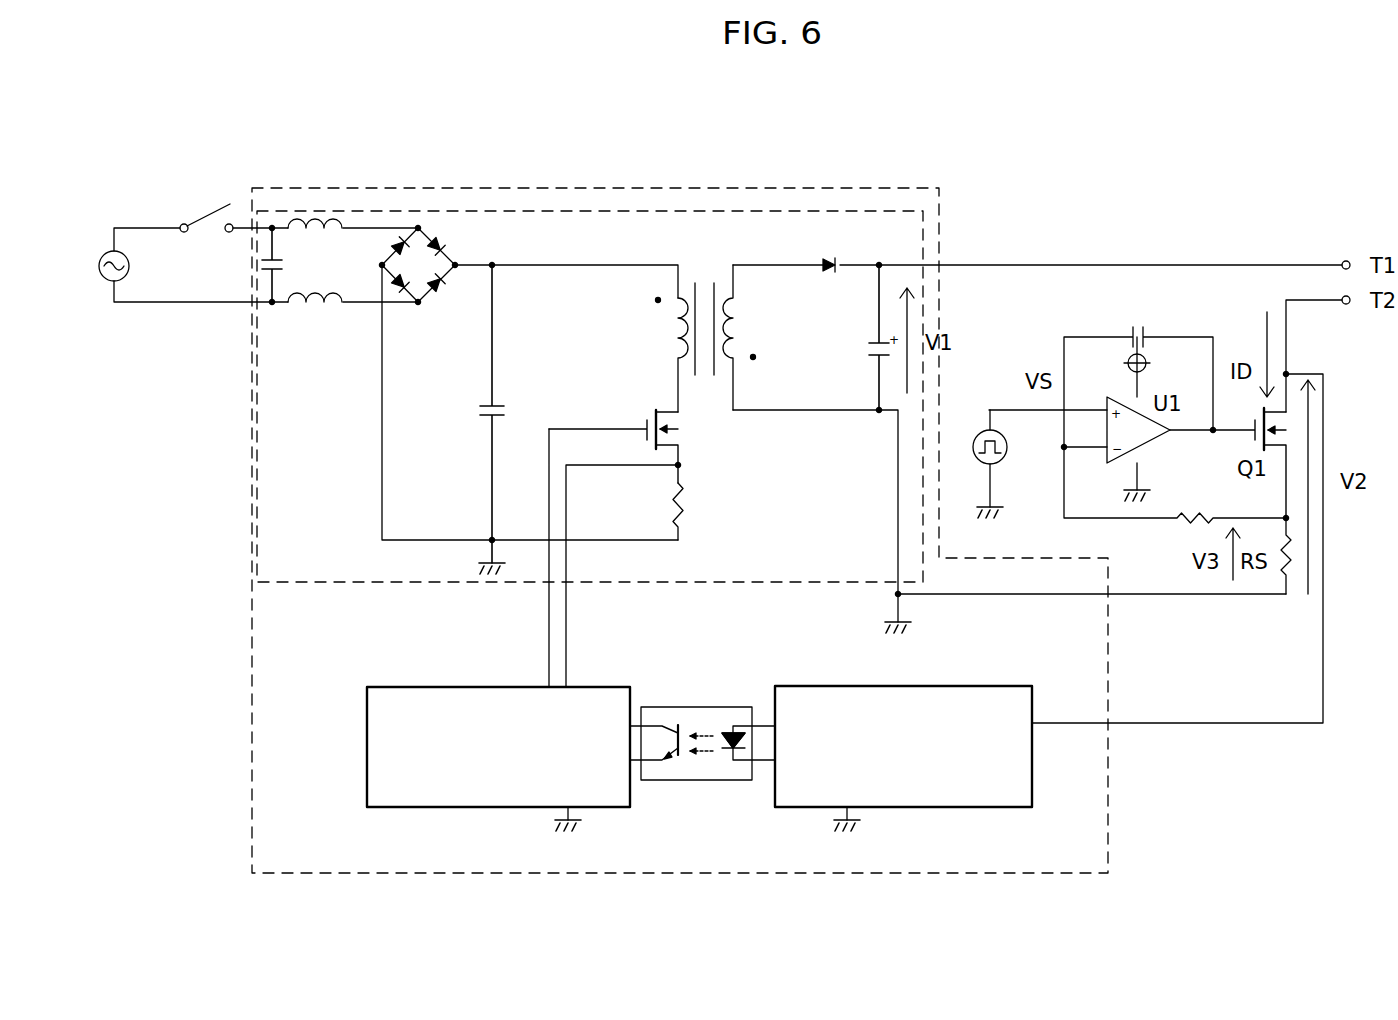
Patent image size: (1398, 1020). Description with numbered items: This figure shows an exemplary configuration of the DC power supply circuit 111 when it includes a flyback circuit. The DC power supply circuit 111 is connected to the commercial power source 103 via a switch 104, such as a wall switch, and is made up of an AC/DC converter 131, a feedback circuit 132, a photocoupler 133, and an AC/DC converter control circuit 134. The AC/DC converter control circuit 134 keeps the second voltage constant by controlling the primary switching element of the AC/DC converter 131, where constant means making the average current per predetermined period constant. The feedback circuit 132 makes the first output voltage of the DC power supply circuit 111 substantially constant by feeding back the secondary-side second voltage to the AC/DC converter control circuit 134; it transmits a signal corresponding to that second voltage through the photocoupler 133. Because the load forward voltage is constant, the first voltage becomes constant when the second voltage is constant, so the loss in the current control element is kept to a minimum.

The commercial power source 103 is at (100, 256).
The switch 104 is at (200, 212).
The DC power supply circuit 111 is at (593, 188).
The AC/DC converter 131 is at (678, 210).
The feedback circuit 132 is at (835, 685).
The photocoupler 133 is at (700, 706).
The AC/DC converter control circuit 134 is at (418, 686).